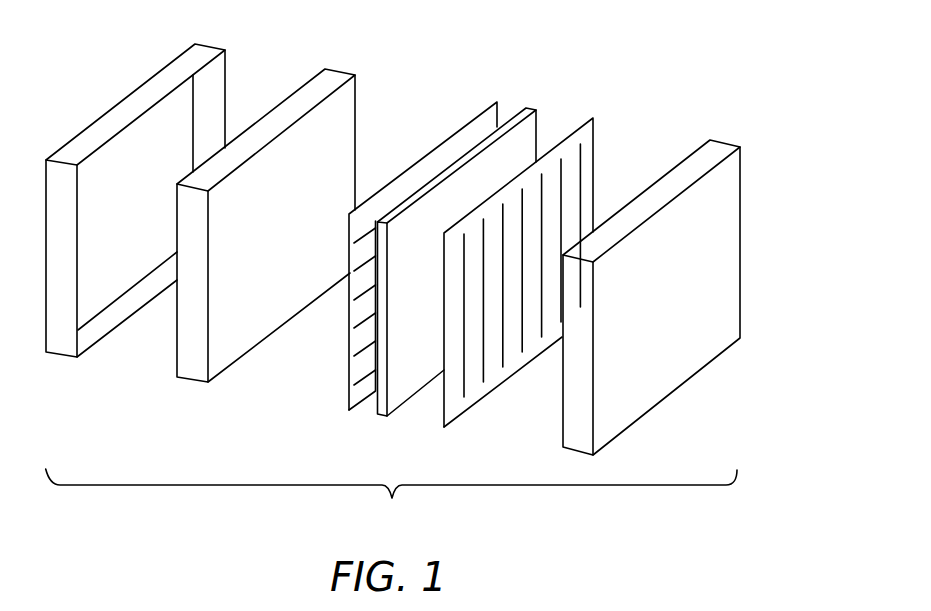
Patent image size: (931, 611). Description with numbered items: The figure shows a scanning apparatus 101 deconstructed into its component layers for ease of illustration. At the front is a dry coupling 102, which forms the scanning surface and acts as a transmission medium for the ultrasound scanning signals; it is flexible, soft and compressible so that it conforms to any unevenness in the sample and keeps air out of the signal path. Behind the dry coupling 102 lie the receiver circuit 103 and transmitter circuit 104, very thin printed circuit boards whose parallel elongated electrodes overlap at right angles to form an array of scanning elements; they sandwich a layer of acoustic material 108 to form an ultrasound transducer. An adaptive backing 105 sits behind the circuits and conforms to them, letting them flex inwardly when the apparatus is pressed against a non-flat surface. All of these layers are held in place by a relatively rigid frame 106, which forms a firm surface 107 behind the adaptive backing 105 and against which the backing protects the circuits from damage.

The scanning apparatus 101 is at (391, 497).
The dry coupling 102 is at (719, 148).
The receiver circuit 103 is at (589, 133).
The transmitter circuit 104 is at (477, 125).
The adaptive backing 105 is at (335, 77).
The frame 106 is at (205, 53).
The firm surface 107 is at (107, 276).
The layer of acoustic material 108 is at (527, 105).